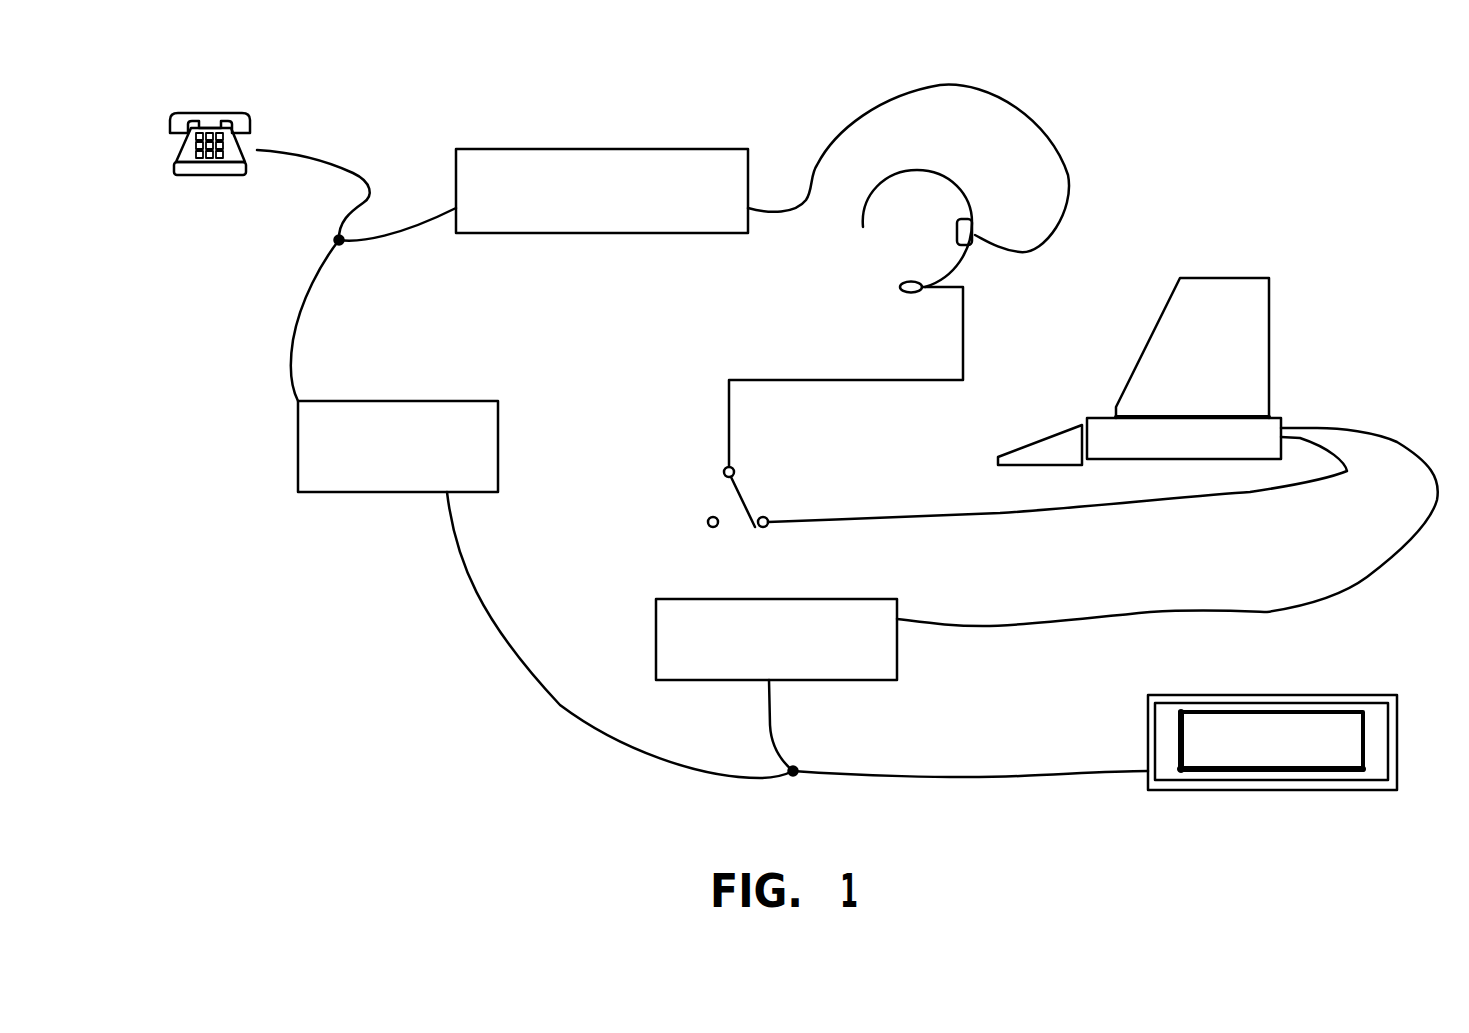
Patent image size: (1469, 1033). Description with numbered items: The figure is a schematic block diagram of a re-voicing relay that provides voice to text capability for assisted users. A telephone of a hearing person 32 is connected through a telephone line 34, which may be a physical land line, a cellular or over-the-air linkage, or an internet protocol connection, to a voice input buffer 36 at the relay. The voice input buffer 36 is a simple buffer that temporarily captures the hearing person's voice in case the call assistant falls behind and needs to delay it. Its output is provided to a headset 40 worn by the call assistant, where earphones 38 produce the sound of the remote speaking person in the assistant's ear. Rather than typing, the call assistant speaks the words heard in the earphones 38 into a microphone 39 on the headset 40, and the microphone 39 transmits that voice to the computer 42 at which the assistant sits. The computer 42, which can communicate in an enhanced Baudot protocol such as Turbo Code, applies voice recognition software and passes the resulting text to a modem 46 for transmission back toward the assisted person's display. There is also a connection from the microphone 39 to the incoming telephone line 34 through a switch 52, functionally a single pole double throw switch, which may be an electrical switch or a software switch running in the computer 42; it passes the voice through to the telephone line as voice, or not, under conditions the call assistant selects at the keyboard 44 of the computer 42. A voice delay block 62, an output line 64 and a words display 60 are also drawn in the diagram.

The telephone of a hearing person 32 is at (215, 178).
The telephone line 34 is at (332, 147).
The voice input buffer 36 is at (572, 134).
The earphones 38 is at (982, 207).
The microphone 39 is at (888, 290).
The headset 40 is at (865, 188).
The computer 42 is at (1232, 270).
The keyboard 44 is at (998, 447).
The modem 46 is at (648, 618).
The switch 52 is at (720, 460).
The display 60 is at (1230, 797).
The voice delay 62 is at (398, 446).
The display line 64 is at (978, 782).